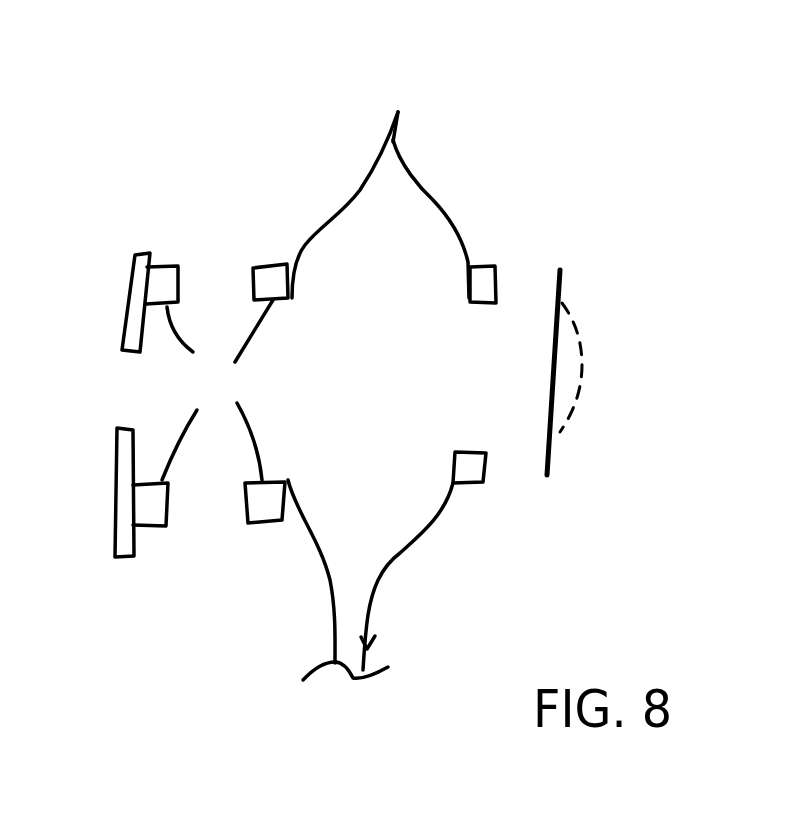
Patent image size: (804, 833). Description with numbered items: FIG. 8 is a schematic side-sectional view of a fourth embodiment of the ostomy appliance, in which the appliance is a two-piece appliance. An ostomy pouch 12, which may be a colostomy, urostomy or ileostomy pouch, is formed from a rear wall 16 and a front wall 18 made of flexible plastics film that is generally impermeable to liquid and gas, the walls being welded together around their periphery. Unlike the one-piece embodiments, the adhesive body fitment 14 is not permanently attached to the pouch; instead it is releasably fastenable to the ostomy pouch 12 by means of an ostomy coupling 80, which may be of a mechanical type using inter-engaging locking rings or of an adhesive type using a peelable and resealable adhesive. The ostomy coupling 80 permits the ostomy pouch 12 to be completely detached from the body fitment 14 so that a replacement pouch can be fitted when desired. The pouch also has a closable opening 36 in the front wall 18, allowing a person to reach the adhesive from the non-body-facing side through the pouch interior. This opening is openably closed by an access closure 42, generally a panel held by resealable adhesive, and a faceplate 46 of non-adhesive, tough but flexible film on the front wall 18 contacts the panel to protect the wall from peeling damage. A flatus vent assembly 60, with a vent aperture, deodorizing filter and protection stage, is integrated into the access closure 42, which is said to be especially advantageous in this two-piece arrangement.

The ostomy pouch 12 is at (414, 86).
The body fitment 14 is at (154, 220).
The rear wall 16 is at (357, 190).
The front wall 18 is at (433, 200).
The closable opening 36 is at (479, 384).
The access closure 42 is at (560, 283).
The faceplate 46 is at (497, 283).
The flatus vent assembly 60 is at (590, 393).
The ostomy coupling 80 is at (225, 393).